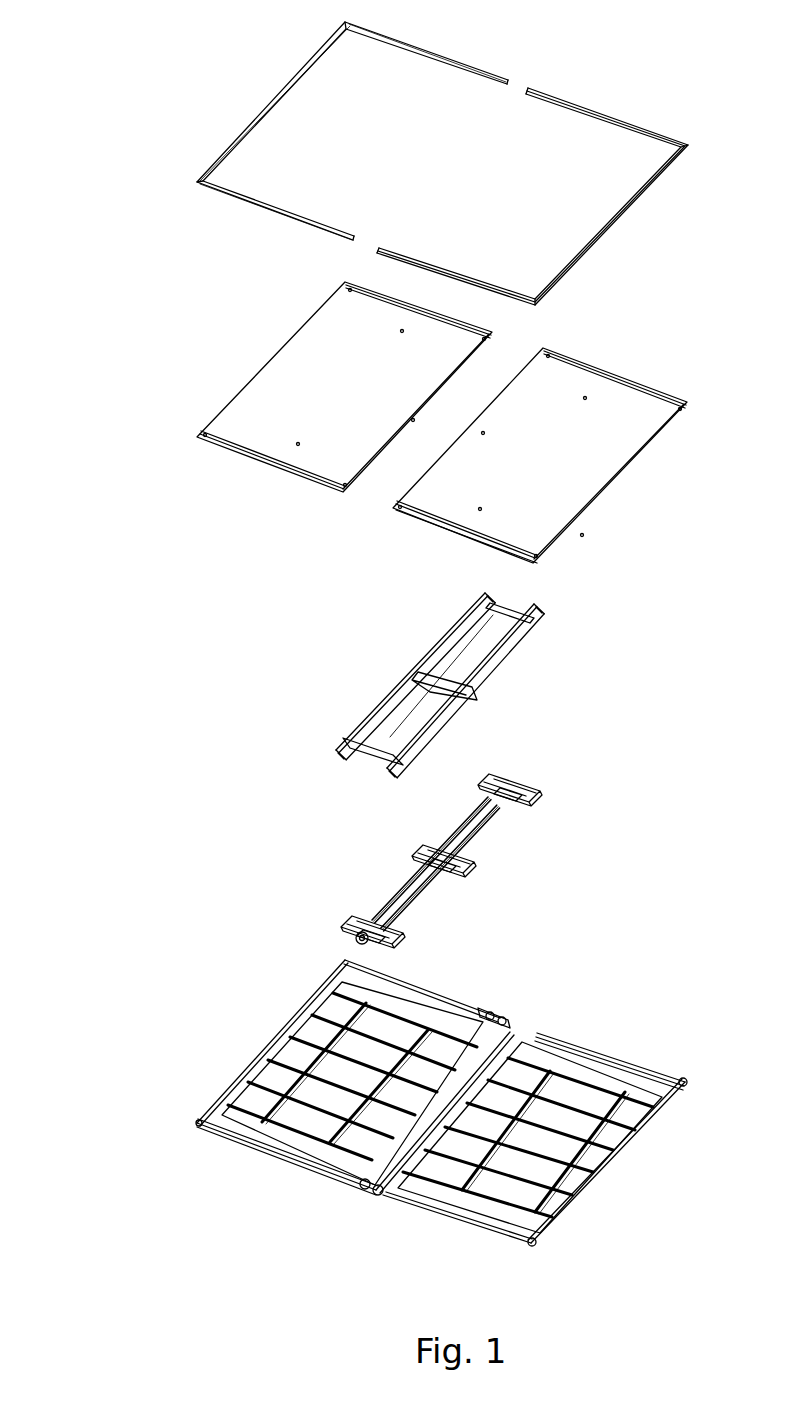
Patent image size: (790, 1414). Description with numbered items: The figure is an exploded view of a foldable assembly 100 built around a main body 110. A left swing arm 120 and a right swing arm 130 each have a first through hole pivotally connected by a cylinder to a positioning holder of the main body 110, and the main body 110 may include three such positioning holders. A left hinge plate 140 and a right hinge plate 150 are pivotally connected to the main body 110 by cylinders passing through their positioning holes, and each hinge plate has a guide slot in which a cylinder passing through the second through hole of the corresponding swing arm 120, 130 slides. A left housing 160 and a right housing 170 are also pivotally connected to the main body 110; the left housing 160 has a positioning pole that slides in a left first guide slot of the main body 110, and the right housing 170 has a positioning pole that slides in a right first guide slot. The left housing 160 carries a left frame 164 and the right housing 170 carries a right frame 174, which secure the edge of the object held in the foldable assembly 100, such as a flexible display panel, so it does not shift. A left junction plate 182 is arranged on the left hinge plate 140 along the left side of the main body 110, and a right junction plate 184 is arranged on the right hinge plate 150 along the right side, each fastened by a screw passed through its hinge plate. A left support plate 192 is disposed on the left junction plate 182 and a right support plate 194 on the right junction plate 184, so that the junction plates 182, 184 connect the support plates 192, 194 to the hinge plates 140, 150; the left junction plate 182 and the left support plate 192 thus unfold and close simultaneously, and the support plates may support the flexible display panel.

The foldable assembly 100 is at (78, 27).
The main body 110 is at (350, 935).
The left swing arm 120 is at (365, 912).
The right swing arm 130 is at (398, 928).
The left hinge plate 140 is at (352, 915).
The right hinge plate 150 is at (400, 935).
The left housing 160 is at (310, 1035).
The right housing 170 is at (625, 1150).
The left frame 164 is at (429, 163).
The right frame 174 is at (622, 212).
The left junction plate 182 is at (395, 700).
The right junction plate 184 is at (440, 707).
The left support plate 192 is at (275, 365).
The right support plate 194 is at (610, 463).